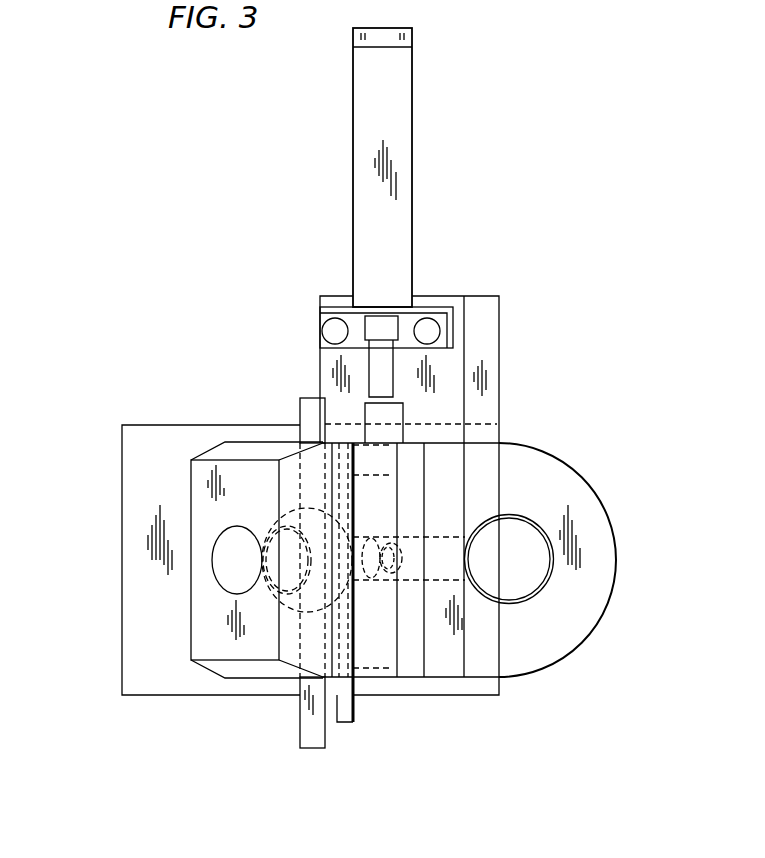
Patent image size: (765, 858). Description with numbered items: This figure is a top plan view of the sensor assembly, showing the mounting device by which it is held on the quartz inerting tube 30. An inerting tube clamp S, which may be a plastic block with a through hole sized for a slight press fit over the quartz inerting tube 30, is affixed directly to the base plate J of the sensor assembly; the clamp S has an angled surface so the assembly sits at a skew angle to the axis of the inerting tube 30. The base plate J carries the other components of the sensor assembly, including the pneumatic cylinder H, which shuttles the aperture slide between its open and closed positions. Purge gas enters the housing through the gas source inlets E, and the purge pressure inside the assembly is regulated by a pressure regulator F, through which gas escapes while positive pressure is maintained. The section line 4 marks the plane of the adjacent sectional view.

The pneumatic cylinder H is at (412, 183).
The base plate J is at (483, 354).
The inerting tube clamp S is at (595, 497).
The quartz inerting tube 30 is at (525, 516).
The gas source inlets E is at (312, 398).
The pressure regulator F is at (345, 722).
The section line 4- 4 is at (120, 560).